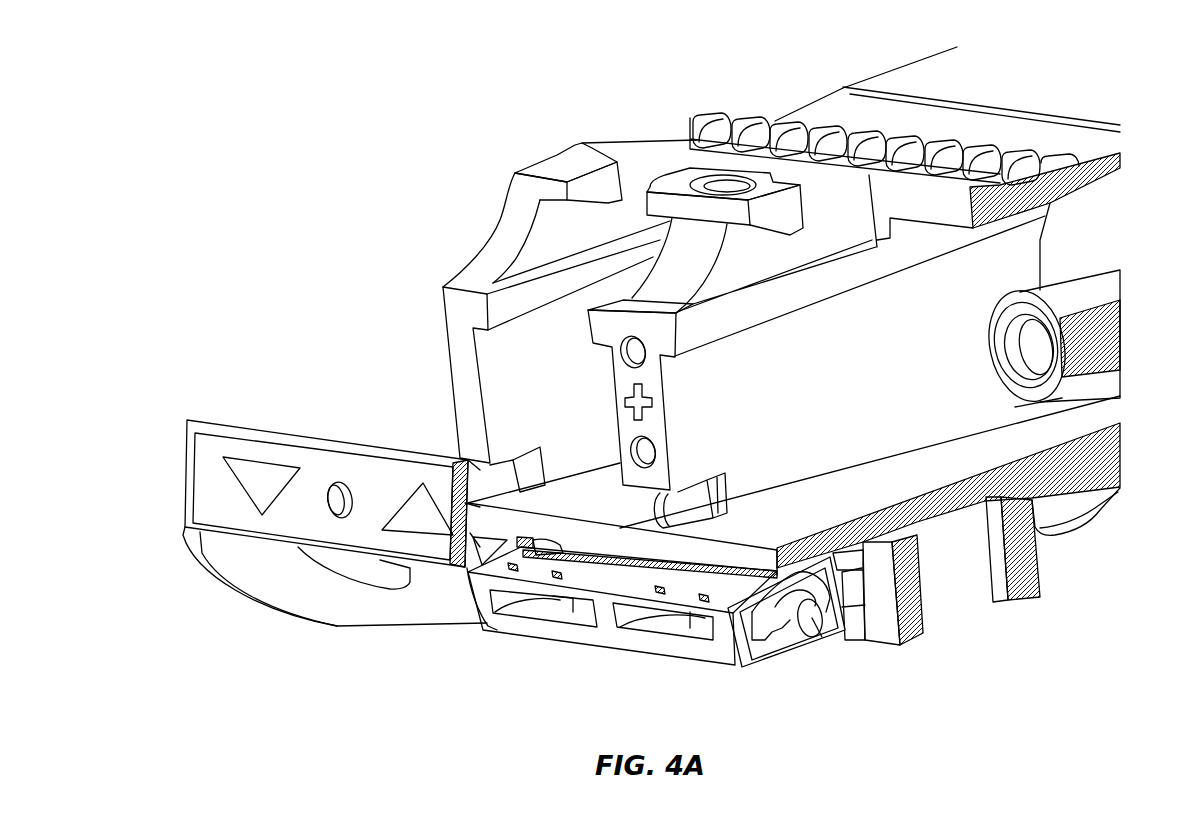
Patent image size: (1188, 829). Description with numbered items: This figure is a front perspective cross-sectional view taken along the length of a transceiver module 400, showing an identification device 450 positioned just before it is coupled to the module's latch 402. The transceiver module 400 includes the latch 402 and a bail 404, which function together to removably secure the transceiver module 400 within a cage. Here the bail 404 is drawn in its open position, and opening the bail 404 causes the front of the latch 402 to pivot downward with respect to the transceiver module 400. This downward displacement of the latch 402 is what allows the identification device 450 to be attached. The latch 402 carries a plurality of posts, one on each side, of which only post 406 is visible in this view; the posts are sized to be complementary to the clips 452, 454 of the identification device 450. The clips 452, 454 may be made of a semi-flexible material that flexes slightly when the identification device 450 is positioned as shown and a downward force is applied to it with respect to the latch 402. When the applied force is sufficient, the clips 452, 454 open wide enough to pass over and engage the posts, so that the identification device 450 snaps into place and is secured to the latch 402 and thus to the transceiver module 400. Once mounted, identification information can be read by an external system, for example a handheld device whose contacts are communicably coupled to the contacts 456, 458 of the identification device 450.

The transceiver module 400 is at (380, 193).
The latch 402 is at (598, 666).
The bail 404 is at (313, 435).
The post 406 is at (810, 620).
The identification device 450 is at (510, 622).
The clip 452 is at (778, 630).
The clip 454 is at (521, 540).
The contact 456 is at (553, 603).
The contact 458 is at (673, 620).